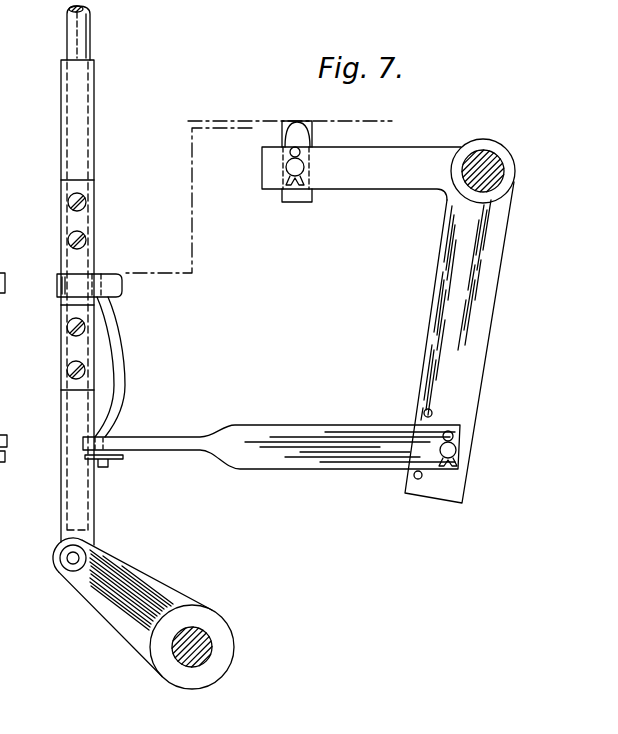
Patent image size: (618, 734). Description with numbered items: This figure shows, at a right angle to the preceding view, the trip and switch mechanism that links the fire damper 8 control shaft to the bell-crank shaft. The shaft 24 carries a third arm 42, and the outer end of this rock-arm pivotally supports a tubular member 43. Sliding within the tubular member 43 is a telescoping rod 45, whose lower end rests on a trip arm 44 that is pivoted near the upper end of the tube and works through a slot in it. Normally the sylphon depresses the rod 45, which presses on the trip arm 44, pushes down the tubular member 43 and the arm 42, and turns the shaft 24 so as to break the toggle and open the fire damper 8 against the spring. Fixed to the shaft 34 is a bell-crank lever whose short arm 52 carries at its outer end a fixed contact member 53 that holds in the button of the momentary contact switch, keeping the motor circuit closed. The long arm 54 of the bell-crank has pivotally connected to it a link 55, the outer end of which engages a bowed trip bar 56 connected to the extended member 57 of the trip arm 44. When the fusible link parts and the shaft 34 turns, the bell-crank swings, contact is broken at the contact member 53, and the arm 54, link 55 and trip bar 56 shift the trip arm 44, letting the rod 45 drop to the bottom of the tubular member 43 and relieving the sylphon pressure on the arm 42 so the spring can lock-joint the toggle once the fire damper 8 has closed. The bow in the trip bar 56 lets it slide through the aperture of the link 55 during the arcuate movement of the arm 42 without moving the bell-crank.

The fire damper 8 is at (488, 132).
The shaft 24 is at (210, 645).
The shaft 34 is at (478, 155).
The third arm 42 is at (110, 615).
The tubular member 43 is at (59, 494).
The trip arm 44 is at (139, 326).
The rod 45 is at (89, 35).
The short arm 52 is at (369, 182).
The contact member 53 is at (294, 132).
The long arm 54 is at (442, 308).
The link 55 is at (308, 428).
The trip bar 56 is at (125, 387).
The extended member 57 is at (123, 290).